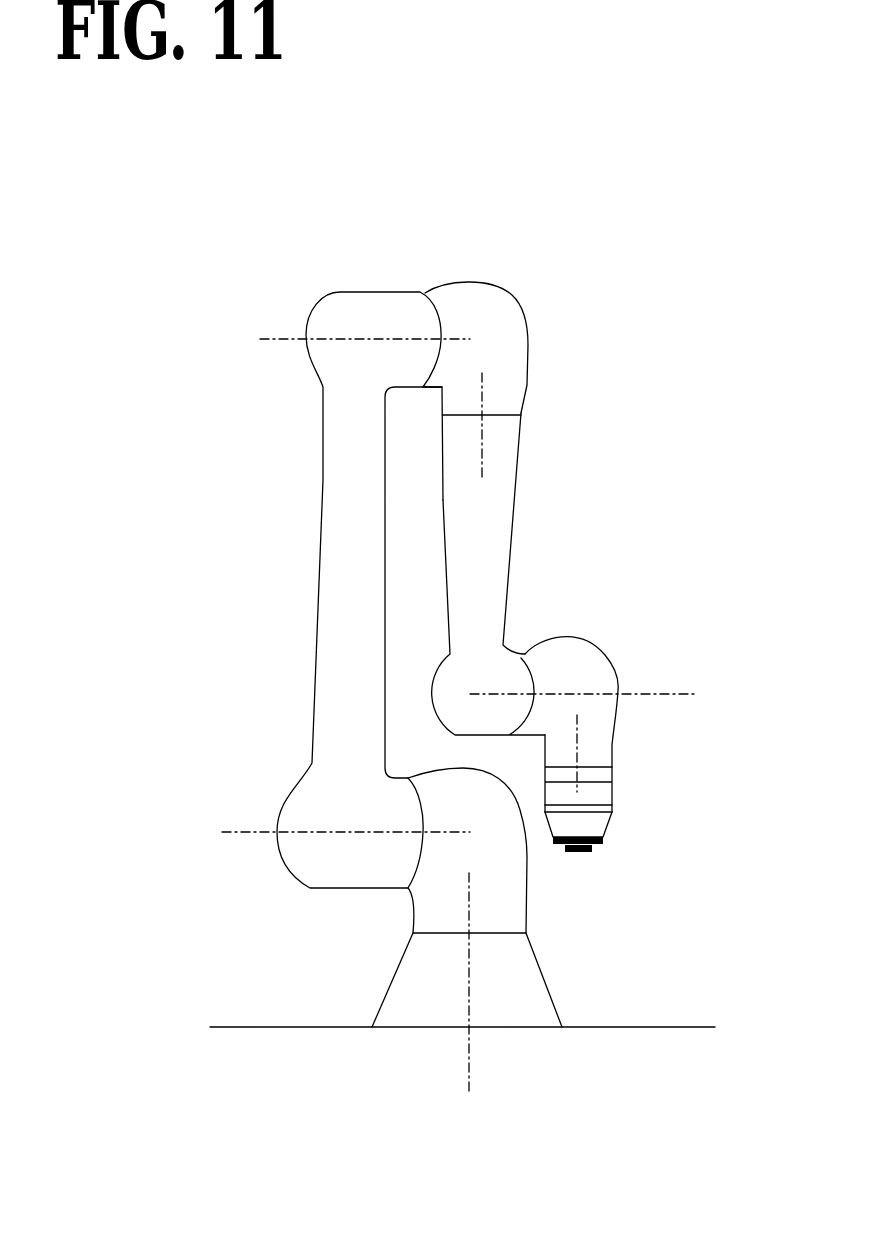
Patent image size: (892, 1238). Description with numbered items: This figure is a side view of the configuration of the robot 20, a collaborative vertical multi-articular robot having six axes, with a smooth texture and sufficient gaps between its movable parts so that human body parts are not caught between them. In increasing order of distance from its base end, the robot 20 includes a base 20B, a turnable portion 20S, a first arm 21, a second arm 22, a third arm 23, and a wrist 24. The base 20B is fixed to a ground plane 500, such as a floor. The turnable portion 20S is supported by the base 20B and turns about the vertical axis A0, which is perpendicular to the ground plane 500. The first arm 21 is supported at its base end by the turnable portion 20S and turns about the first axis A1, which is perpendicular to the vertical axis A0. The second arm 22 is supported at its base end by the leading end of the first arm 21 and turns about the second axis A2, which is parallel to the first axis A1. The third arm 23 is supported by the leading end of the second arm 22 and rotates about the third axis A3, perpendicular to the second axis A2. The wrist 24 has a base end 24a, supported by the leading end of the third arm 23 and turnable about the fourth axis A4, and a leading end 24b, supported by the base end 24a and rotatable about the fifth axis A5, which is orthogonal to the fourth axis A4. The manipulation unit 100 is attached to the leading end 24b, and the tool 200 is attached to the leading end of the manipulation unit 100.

The robot 20 is at (666, 474).
The base 20B is at (512, 993).
The turnable portion 20S is at (490, 880).
The first arm 21 is at (347, 573).
The second arm 22 is at (495, 328).
The third arm 23 is at (478, 533).
The wrist 24 is at (758, 603).
The base end 24a is at (570, 663).
The leading end 24b is at (597, 773).
The manipulation unit 100 is at (597, 790).
The tool 200 is at (595, 820).
The ground plane 500 is at (663, 1027).
The vertical axis A0 is at (467, 1043).
The first axis A1 is at (330, 830).
The second axis A2 is at (363, 338).
The third axis A3 is at (482, 427).
The fourth axis A4 is at (638, 693).
The fifth axis A5 is at (578, 753).